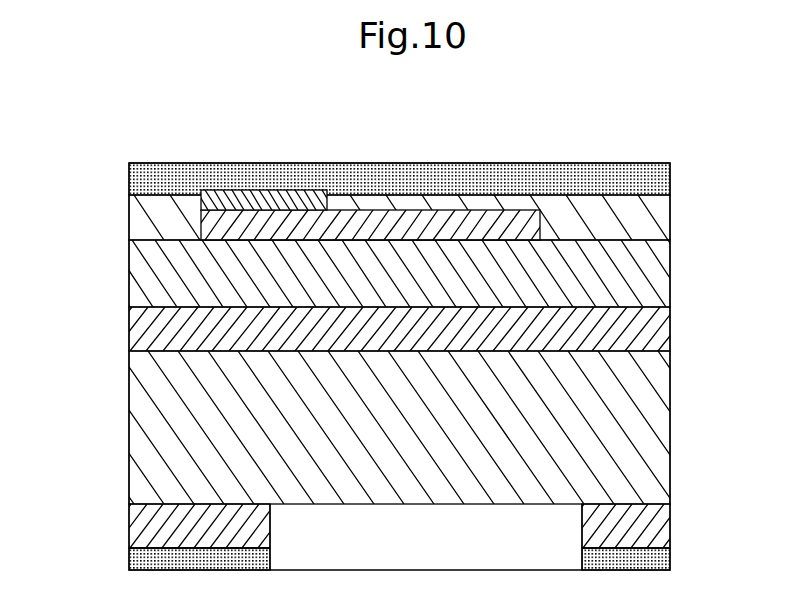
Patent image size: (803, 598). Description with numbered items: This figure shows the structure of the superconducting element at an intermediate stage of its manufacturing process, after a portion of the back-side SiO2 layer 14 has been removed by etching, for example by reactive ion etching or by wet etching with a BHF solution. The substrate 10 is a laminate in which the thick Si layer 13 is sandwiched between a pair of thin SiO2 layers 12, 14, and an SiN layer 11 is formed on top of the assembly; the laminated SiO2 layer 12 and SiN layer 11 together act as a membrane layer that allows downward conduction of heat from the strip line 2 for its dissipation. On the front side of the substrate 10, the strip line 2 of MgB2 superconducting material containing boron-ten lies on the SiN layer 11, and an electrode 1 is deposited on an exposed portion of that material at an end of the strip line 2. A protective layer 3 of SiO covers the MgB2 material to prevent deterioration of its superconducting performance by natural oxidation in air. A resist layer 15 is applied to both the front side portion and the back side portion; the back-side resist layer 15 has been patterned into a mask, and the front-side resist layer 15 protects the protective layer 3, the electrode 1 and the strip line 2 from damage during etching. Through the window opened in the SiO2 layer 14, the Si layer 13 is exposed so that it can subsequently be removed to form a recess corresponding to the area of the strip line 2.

The electrodes 1 is at (248, 192).
The strip line 2 is at (406, 210).
The protective layer 3 is at (665, 213).
The substrate 10 is at (396, 395).
The SiN layer 11 is at (665, 268).
The SiO2 layer 12 is at (665, 326).
The Si layer 13 is at (665, 418).
The SiO2 layer 14 is at (670, 522).
The resist layer 15 is at (129, 181).